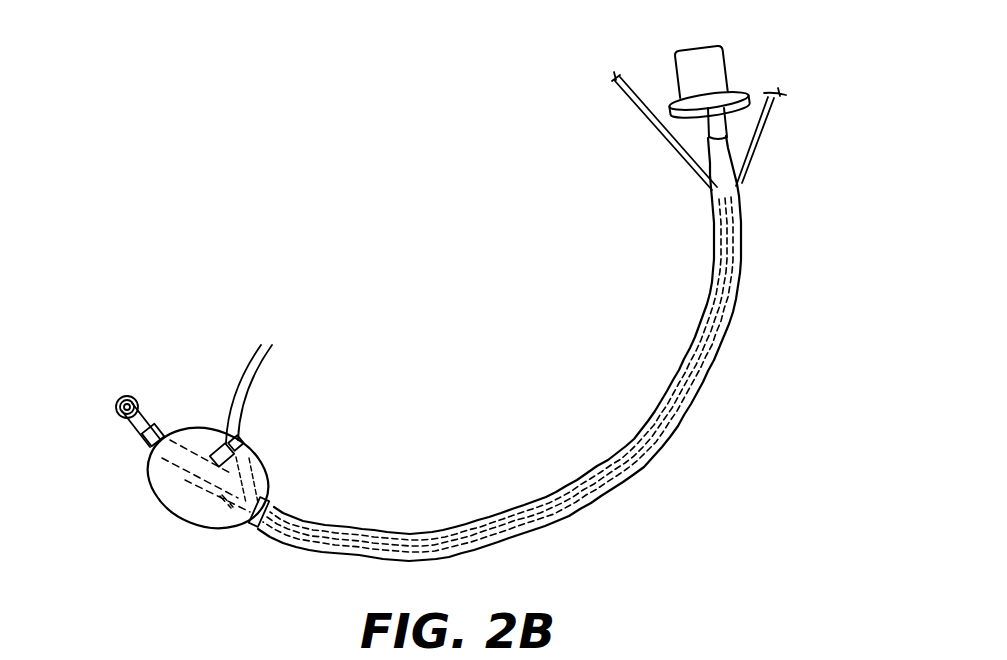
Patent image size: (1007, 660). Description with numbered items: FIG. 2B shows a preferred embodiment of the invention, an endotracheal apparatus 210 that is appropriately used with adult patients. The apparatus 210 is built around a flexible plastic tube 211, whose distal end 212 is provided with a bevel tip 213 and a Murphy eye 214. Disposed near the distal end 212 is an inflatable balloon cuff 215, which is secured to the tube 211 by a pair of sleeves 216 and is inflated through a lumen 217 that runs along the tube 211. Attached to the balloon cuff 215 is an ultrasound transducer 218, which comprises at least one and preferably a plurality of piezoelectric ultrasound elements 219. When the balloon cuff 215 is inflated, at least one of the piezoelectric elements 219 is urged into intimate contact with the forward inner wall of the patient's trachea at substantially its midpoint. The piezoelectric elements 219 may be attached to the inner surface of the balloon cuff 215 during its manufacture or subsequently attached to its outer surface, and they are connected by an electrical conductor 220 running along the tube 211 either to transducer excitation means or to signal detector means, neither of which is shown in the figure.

The endotracheal apparatus 210 is at (592, 399).
The flexible plastic tube 211 is at (727, 242).
The distal end 212 is at (112, 440).
The bevel tip 213 is at (114, 399).
The Murphy eye 214 is at (128, 404).
The inflatable balloon cuff 215 is at (193, 437).
The sleeves 216 is at (152, 443).
The lumen 217 is at (755, 138).
The ultrasound transducer 218 is at (268, 435).
The piezoelectric ultrasound elements 219 is at (262, 381).
The electrical conductor 220 is at (670, 131).